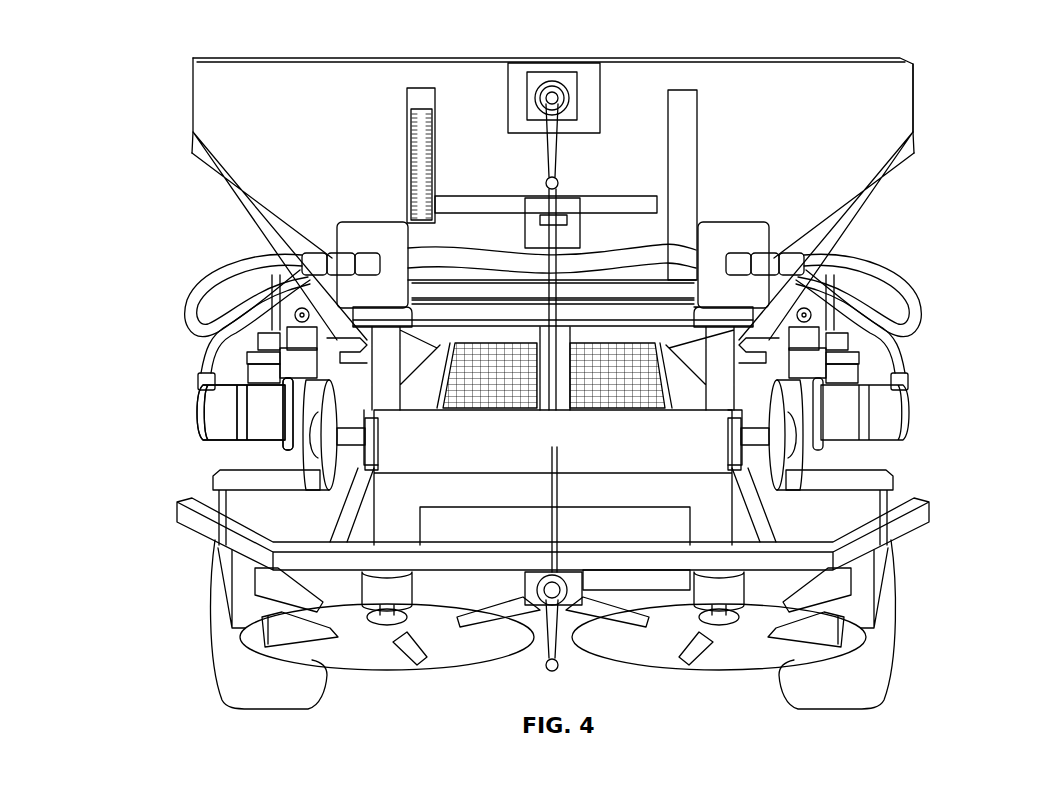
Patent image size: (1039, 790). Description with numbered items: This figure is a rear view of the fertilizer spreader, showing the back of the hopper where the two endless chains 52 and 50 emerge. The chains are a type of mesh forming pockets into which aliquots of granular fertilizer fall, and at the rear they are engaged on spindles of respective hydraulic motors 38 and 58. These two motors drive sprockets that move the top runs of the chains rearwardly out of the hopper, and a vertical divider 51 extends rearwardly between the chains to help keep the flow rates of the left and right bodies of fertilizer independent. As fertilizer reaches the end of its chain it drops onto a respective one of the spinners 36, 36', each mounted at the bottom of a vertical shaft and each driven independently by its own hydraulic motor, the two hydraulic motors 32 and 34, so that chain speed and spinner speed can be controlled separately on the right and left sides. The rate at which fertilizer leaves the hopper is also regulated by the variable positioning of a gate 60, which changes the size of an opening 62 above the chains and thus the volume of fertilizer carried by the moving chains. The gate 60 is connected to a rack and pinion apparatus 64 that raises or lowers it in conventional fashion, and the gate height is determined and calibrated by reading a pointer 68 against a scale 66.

The hydraulic motor 32 is at (757, 240).
The hydraulic motor 34 is at (347, 234).
The spinner 36 is at (329, 624).
The spinner 36' is at (792, 624).
The hydraulic motor 38 is at (312, 446).
The chain 50 is at (265, 415).
The vertical divider 51 is at (290, 437).
The chain 52 is at (563, 410).
The hydraulic motor 58 is at (795, 437).
The gate 60 is at (465, 222).
The opening 62 is at (553, 347).
The rack and pinion apparatus 64 is at (546, 180).
The scale 66 is at (410, 112).
The pointer 68 is at (448, 192).